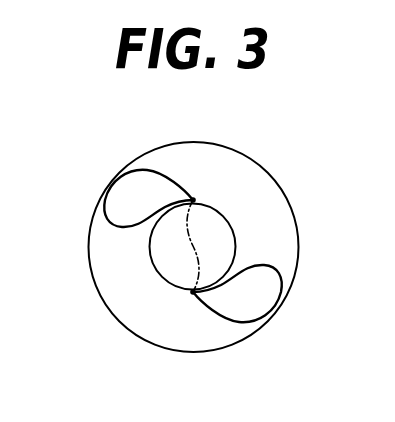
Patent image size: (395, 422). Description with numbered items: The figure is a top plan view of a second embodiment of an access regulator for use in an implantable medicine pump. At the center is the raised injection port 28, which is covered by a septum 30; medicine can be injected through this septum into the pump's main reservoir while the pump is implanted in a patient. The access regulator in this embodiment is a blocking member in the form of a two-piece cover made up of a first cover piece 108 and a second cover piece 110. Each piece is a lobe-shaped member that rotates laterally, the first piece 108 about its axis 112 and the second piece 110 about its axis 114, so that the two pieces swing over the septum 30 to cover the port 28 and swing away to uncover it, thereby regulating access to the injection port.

The raised injection port 28 is at (285, 248).
The septum 30 is at (228, 232).
The cover piece 108 is at (252, 308).
The cover piece 110 is at (120, 203).
The axis 112 is at (193, 292).
The axis 114 is at (193, 200).